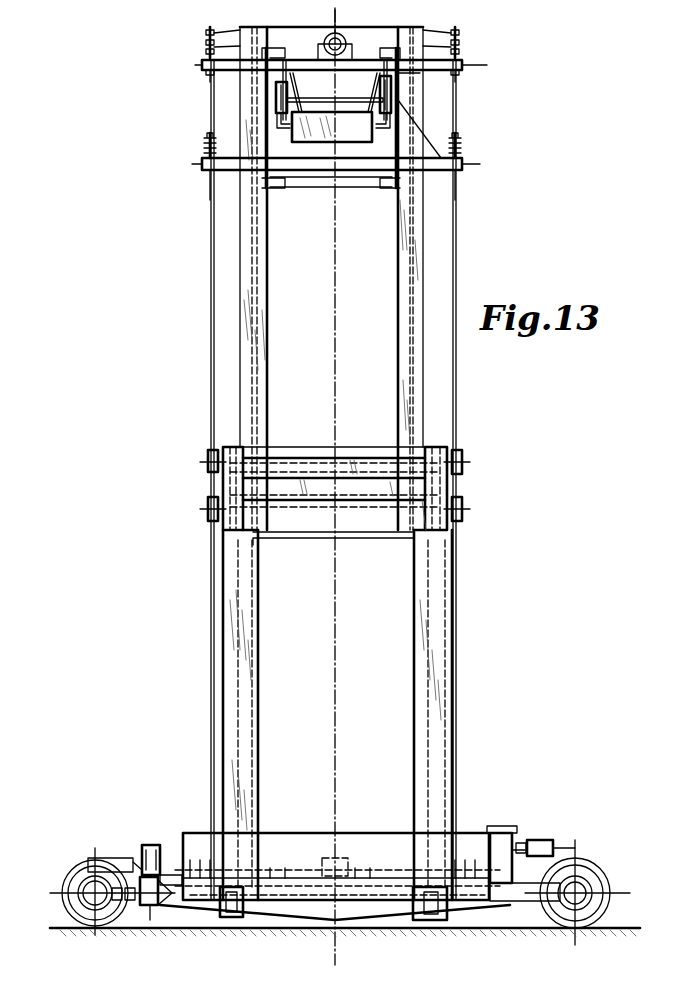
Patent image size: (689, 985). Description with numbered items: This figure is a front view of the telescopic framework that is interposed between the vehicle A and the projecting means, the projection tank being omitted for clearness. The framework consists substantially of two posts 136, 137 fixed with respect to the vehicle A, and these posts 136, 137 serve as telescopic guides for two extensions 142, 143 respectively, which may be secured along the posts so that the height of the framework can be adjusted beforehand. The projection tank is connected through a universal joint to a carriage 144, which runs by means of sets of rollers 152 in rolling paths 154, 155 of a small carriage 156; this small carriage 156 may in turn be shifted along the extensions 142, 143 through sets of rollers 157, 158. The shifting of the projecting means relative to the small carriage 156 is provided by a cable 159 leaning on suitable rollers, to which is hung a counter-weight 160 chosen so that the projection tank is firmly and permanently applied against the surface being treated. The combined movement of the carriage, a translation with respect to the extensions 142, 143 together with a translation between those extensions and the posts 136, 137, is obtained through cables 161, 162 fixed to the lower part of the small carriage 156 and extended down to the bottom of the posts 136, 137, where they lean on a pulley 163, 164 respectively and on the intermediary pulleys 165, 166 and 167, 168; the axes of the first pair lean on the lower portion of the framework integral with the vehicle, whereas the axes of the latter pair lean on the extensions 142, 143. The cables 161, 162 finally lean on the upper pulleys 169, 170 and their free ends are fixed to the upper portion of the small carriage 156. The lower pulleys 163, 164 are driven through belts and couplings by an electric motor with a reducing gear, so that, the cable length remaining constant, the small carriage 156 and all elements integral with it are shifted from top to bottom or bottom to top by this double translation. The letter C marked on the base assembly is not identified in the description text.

The post 136 is at (230, 700).
The post 137 is at (440, 732).
The extension 142 is at (245, 330).
The extension 143 is at (415, 356).
The carriage 144 is at (398, 124).
The set of rollers 152 is at (275, 100).
The rolling path 154 is at (278, 118).
The rolling path 155 is at (390, 60).
The small carriage 156 is at (396, 148).
The set of rollers 157 is at (258, 72).
The set of rollers 158 is at (262, 183).
The cable 159 is at (290, 86).
The counter-weight 160 is at (332, 140).
The cable 161 is at (211, 405).
The cable 162 is at (456, 420).
The pulley 163 is at (215, 895).
The pulley 164 is at (458, 915).
The intermediary pulley 165 is at (208, 462).
The intermediary pulley 166 is at (462, 466).
The intermediary pulley 167 is at (208, 522).
The intermediary pulley 168 is at (462, 520).
The upper pulley 169 is at (206, 34).
The upper pulley 170 is at (459, 40).
The carriage C is at (362, 840).
The vehicle A is at (609, 856).